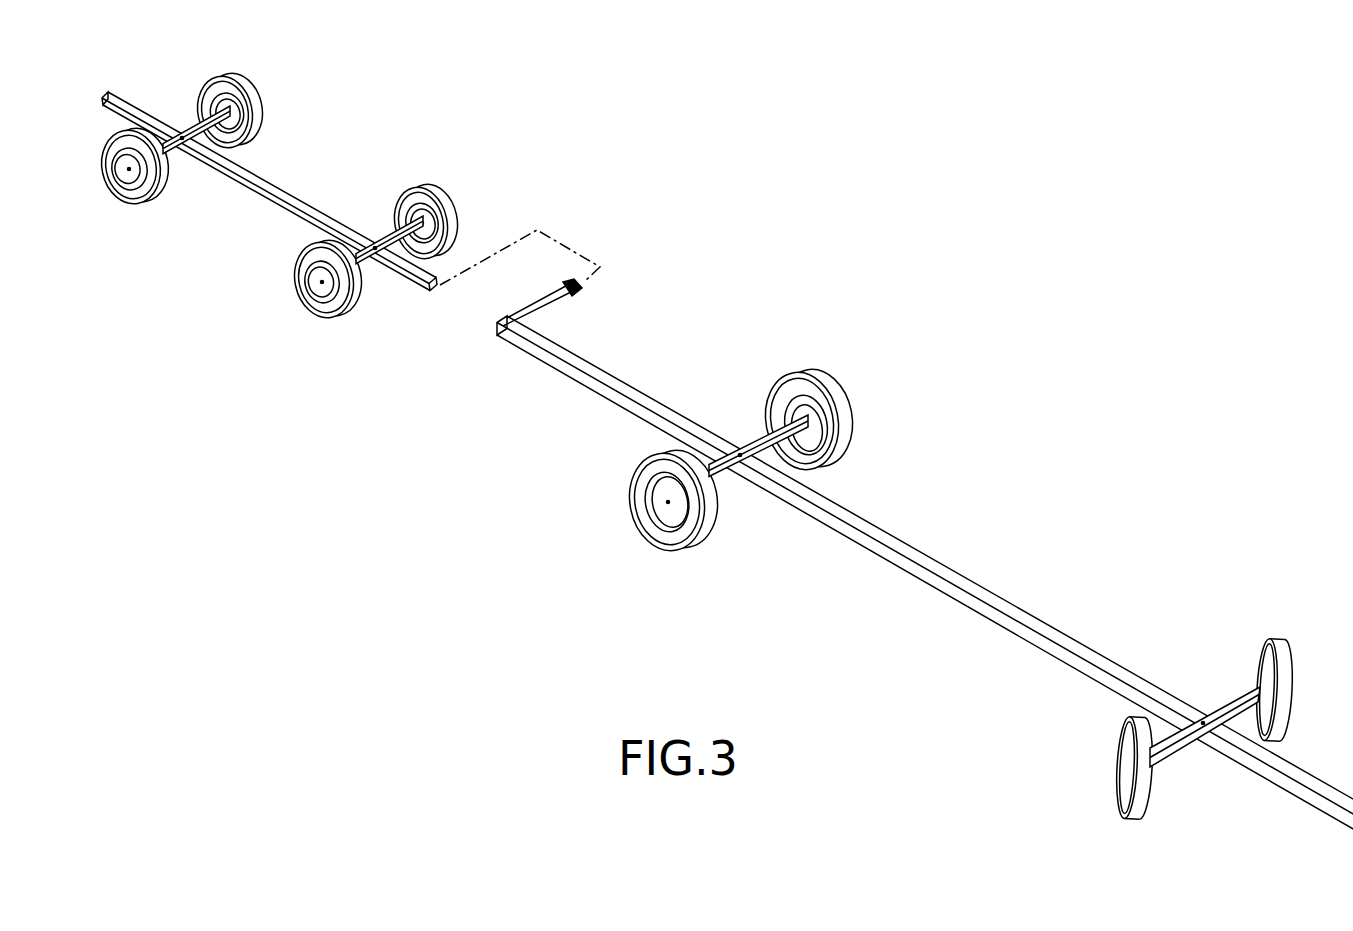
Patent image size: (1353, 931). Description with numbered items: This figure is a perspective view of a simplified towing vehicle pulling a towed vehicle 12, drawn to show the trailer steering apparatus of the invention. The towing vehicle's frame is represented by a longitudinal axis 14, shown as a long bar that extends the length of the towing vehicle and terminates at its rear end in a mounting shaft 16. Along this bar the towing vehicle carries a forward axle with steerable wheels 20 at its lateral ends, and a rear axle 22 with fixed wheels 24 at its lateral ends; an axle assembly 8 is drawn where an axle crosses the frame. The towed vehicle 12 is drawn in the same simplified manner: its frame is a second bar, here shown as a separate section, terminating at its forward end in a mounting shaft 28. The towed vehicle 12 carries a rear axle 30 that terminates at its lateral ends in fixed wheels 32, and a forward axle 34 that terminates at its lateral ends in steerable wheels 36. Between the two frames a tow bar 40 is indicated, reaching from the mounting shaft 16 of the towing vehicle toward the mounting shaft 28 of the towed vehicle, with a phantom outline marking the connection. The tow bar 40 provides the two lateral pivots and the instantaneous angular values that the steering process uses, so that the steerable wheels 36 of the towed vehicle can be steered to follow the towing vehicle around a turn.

The rear axle assembly 8 is at (1222, 707).
The towed vehicle 12 is at (292, 187).
The longitudinal axis 14 is at (972, 580).
The mounting shaft 16 is at (500, 331).
The steerable wheels 20 is at (1288, 660).
The rear axle 22 is at (729, 479).
The fixed wheels 24 is at (835, 388).
The mounting shaft 28 is at (430, 292).
The rear axle 30 is at (186, 129).
The fixed wheels 32 is at (257, 100).
The forward axle 34 is at (374, 245).
The steerable wheels 36 is at (445, 210).
The tow bar 40 is at (584, 290).